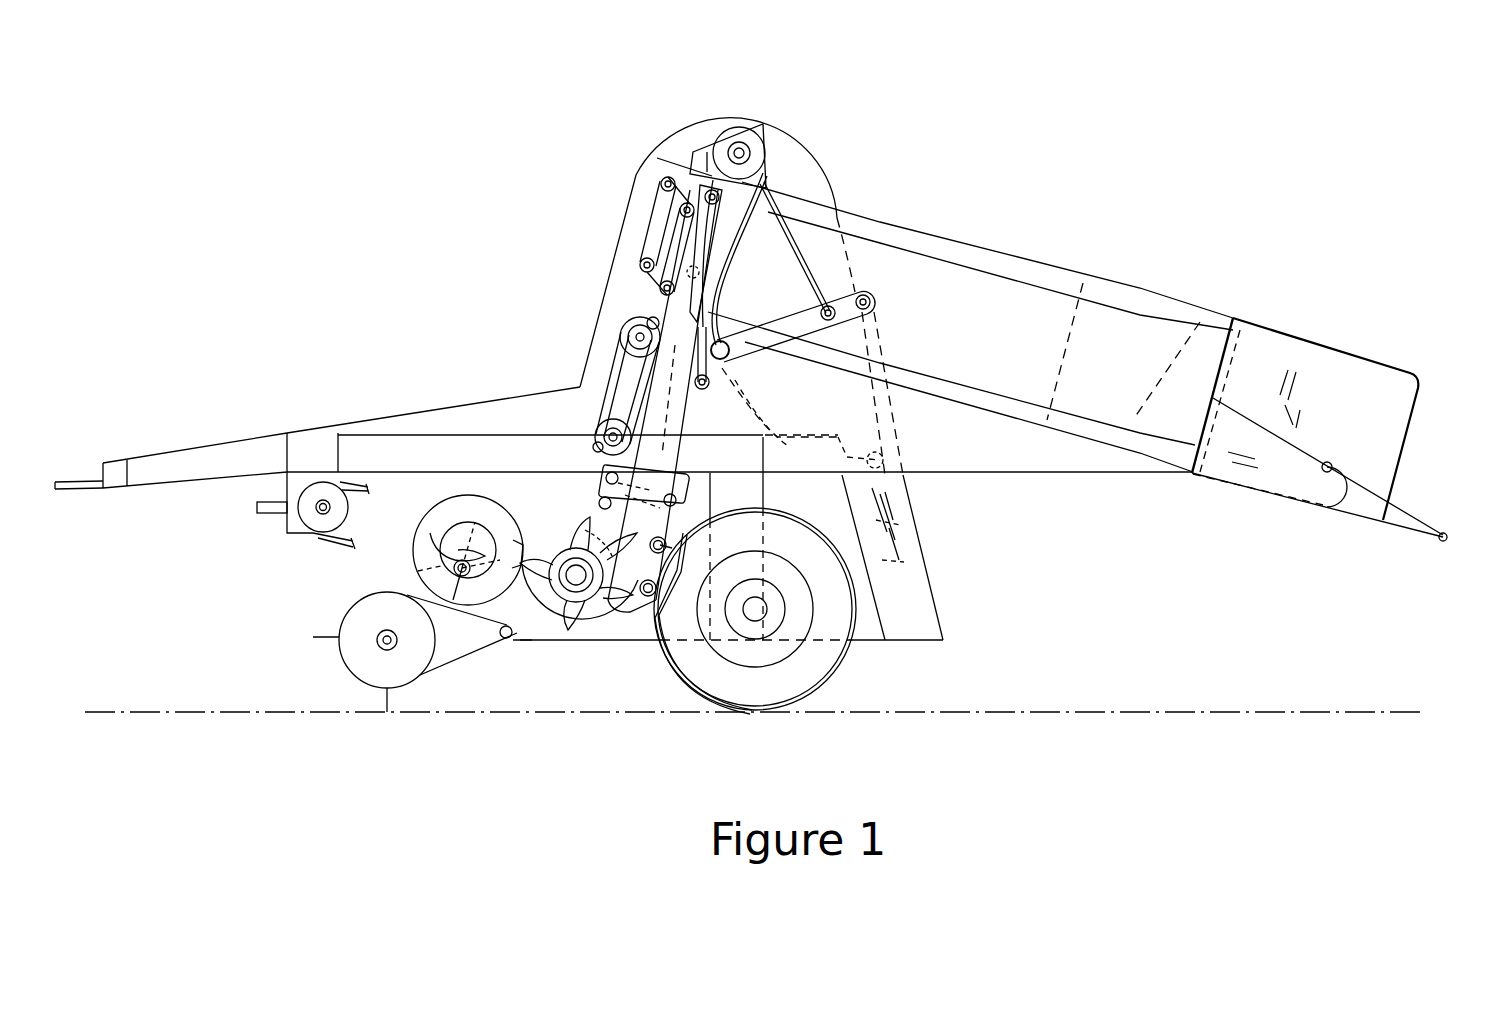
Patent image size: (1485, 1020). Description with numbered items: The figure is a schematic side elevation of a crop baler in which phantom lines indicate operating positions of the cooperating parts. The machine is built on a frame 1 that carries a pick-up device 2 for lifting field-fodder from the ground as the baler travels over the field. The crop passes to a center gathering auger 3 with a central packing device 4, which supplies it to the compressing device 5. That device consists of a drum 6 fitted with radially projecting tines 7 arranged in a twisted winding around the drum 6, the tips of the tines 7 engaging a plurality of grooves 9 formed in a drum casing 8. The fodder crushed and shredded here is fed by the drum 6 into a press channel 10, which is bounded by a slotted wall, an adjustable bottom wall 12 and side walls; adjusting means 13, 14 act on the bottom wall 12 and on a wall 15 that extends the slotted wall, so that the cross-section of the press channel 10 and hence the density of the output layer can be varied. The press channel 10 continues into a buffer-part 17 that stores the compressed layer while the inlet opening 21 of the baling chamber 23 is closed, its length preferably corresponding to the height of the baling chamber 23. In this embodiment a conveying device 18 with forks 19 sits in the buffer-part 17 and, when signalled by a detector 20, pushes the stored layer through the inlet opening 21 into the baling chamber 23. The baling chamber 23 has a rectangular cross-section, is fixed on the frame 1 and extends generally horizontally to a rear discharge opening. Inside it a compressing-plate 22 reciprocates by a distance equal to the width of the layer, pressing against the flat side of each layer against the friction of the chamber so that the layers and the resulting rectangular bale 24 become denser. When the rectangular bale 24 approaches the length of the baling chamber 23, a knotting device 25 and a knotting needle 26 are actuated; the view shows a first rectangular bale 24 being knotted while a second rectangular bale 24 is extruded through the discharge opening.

The frame 1 is at (257, 453).
The pick-up device 2 is at (353, 667).
The center gathering auger 3 is at (418, 541).
The central packing device 4 is at (418, 571).
The compressing device 5 is at (520, 650).
The drum 6 is at (560, 596).
The tines 7 is at (633, 440).
The drum casing 8 is at (630, 575).
The grooves 9 is at (633, 606).
The press channel 10 is at (690, 463).
The adjustable bottom wall 12 is at (684, 548).
The adjusting means 13 is at (666, 560).
The adjusting means 14 is at (599, 505).
The wall 15 is at (606, 480).
The buffer-part 17 is at (647, 388).
The conveying device 18 is at (622, 340).
The forks 19 is at (653, 320).
The detector 20 is at (713, 372).
The inlet opening 21 is at (677, 310).
The compressing-plate 22 is at (697, 235).
The baling chamber 23 is at (845, 252).
The rectangular bale 24 is at (998, 297).
The knotting device 25 is at (752, 140).
The knotting needle 26 is at (772, 184).